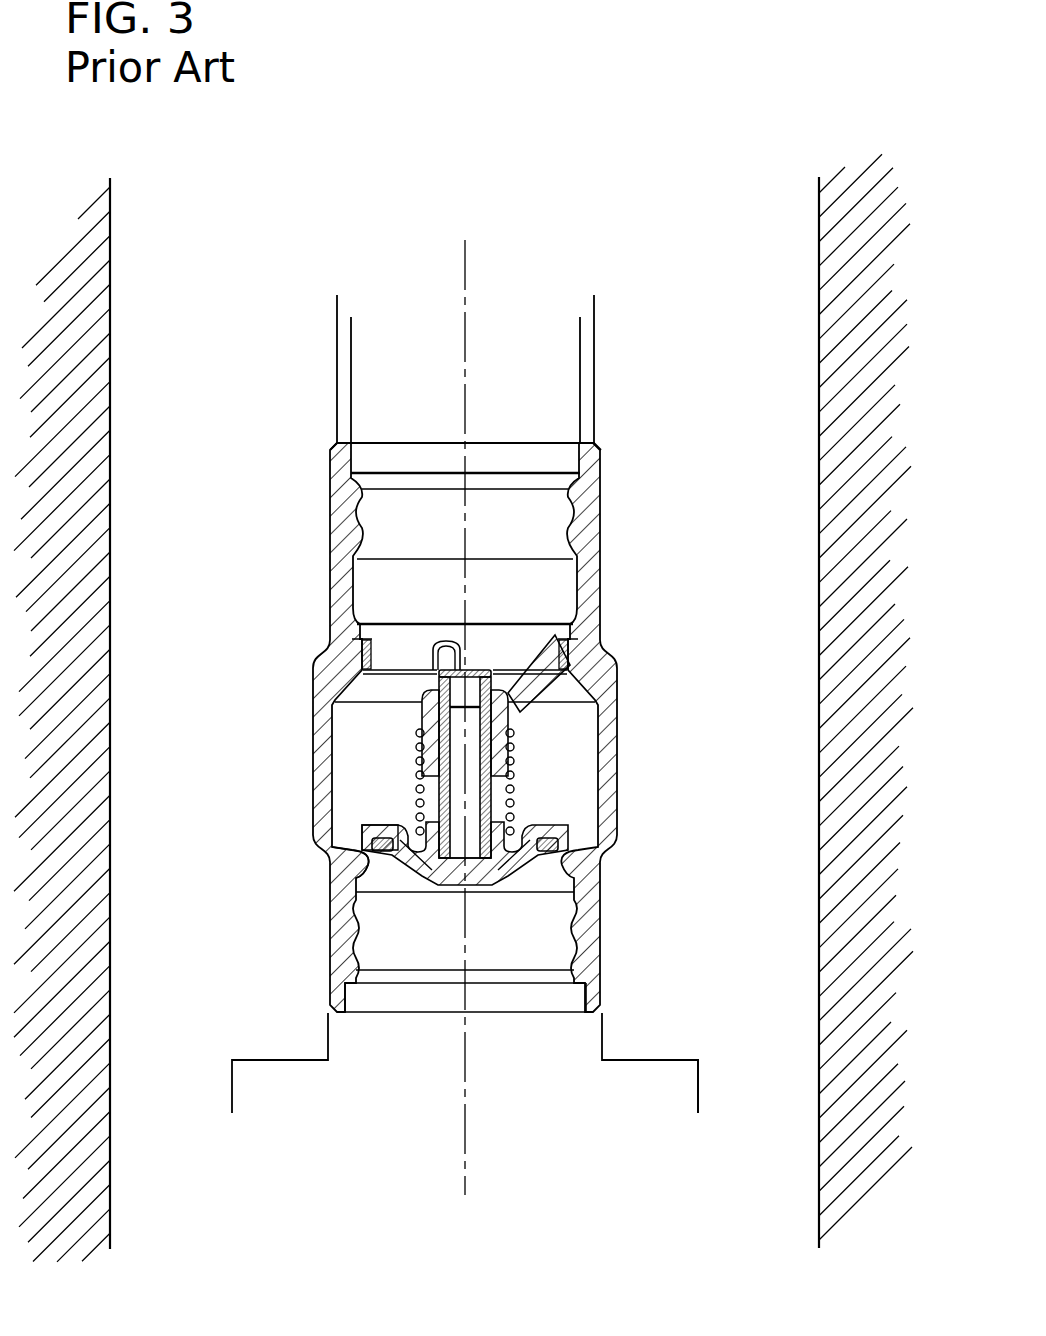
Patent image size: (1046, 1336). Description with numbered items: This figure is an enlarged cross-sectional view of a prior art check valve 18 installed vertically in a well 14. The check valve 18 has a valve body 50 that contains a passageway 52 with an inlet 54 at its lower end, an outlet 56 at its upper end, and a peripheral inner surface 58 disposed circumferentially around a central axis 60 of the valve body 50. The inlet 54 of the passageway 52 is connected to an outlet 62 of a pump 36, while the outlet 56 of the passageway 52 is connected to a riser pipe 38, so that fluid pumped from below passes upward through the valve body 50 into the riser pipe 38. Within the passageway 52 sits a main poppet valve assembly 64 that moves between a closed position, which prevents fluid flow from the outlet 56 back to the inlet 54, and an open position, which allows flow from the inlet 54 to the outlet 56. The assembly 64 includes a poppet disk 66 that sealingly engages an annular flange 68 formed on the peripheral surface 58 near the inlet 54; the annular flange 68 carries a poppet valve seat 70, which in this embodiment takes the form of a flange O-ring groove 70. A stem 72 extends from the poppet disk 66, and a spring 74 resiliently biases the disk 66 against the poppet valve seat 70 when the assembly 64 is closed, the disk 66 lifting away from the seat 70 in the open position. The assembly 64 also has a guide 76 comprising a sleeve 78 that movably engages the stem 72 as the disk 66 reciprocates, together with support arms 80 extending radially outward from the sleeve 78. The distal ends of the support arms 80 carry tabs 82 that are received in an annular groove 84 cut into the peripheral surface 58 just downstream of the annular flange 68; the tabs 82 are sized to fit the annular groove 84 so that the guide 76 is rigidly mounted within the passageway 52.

The well 14 is at (806, 331).
The prior art check valve 18 is at (318, 536).
The pump 36 is at (716, 1085).
The riser pipe 38 is at (597, 381).
The valve body 50 is at (328, 492).
The passageway 52 is at (497, 505).
The inlet 54 is at (555, 1013).
The outlet 56 is at (539, 441).
The peripheral inner surface 58 is at (361, 467).
The central axis 60 is at (462, 256).
The outlet of the pump 62 is at (603, 1025).
The main poppet valve assembly 64 is at (578, 820).
The poppet disk 66 is at (373, 837).
The annular flange 68 is at (368, 853).
The poppet valve seat 70 is at (358, 848).
The stem 72 is at (493, 802).
The spring 74 is at (512, 733).
The guide 76 is at (402, 708).
The sleeve 78 is at (416, 731).
The support arms 80 is at (530, 683).
The tabs 82 is at (575, 640).
The annular groove 84 is at (523, 655).